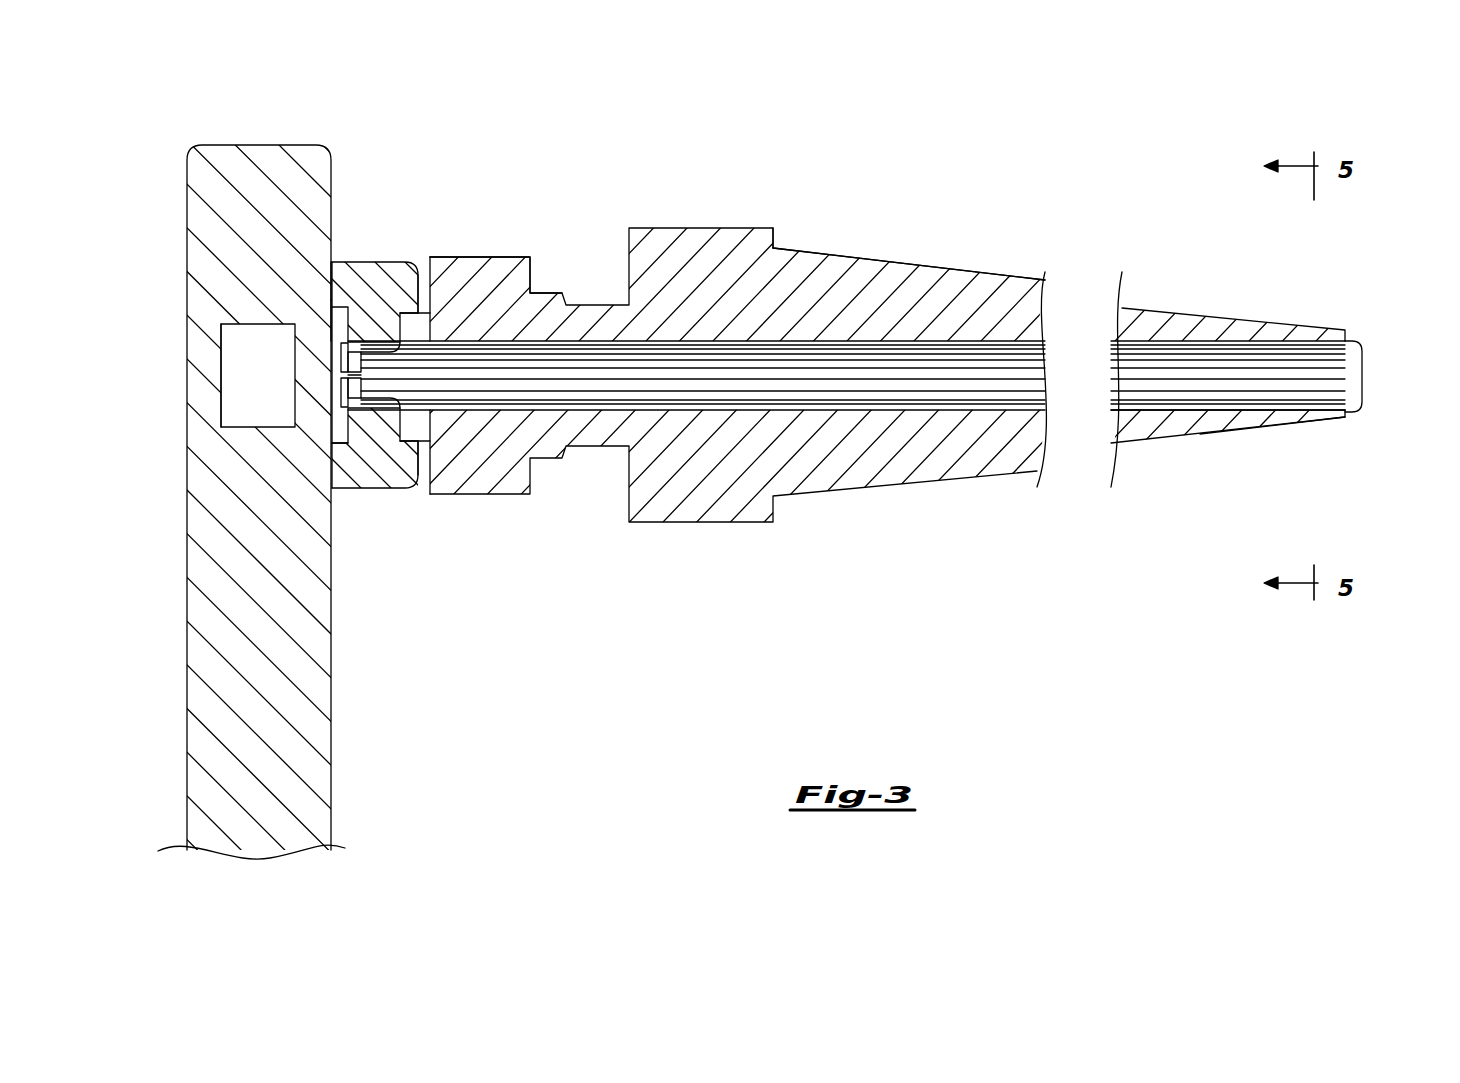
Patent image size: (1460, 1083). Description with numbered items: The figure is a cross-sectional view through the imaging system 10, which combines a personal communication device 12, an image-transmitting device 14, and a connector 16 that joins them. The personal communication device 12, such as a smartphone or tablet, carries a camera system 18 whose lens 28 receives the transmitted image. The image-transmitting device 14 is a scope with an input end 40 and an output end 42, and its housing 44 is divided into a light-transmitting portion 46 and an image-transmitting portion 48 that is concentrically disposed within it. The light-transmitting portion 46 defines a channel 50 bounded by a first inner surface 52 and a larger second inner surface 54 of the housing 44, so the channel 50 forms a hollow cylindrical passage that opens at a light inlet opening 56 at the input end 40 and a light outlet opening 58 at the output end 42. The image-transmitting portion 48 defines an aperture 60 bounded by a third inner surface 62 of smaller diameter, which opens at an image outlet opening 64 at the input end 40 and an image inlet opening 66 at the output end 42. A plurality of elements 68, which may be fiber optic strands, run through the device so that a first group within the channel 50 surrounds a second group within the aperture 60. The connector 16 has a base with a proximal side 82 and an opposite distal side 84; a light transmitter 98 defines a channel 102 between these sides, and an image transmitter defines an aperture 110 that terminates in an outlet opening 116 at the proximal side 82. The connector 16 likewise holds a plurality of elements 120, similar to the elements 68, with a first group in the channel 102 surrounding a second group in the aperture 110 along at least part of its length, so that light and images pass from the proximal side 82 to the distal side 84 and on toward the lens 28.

The imaging system 10 is at (1063, 162).
The personal communication device 12 is at (331, 731).
The image-transmitting device 14 is at (845, 492).
The connector 16 is at (345, 490).
The camera system 18 is at (330, 362).
The lens 28 is at (345, 375).
The input end 40 is at (393, 432).
The output end 42 is at (1347, 417).
The housing 44 is at (1237, 430).
The light-transmitting portion 46 is at (572, 330).
The image-transmitting portion 48 is at (505, 398).
The channel 50 is at (890, 345).
The first inner surface 52 is at (1167, 400).
The second inner surface 54 is at (800, 345).
The light inlet opening 56 is at (418, 312).
The light outlet opening 58 is at (1352, 338).
The aperture 60 is at (1218, 345).
The third inner surface 62 is at (1278, 345).
The image outlet opening 64 is at (400, 377).
The image inlet opening 66 is at (1350, 382).
The elements 68 is at (1195, 350).
The proximal side 82 is at (330, 285).
The distal side 84 is at (420, 455).
The light transmitter 98 is at (318, 322).
The channel 102 is at (340, 395).
The aperture 110 is at (350, 345).
The outlet opening 116 is at (212, 360).
The elements 120 is at (345, 430).